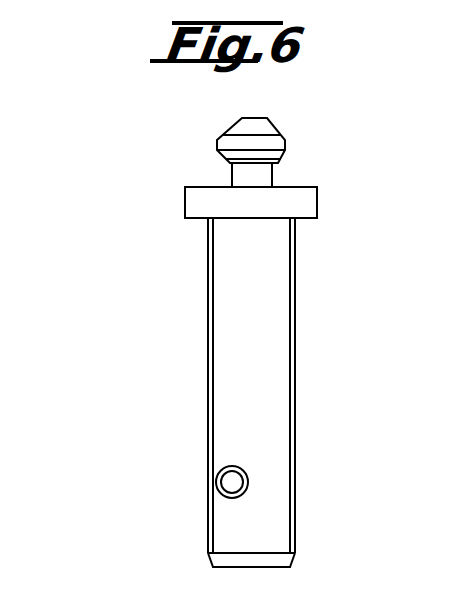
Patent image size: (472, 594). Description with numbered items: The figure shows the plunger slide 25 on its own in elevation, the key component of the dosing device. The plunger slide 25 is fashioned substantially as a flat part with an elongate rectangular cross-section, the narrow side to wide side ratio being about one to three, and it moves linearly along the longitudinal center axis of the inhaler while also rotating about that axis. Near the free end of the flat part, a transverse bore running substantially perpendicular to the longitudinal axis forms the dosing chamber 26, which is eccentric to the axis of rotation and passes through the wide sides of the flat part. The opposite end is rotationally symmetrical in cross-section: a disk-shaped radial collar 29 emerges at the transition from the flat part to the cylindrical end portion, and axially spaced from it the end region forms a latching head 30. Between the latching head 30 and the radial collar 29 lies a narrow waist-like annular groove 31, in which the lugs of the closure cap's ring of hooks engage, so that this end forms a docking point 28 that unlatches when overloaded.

The plunger slide 25 is at (200, 302).
The dosing chamber 26 is at (228, 480).
The docking point 28 is at (307, 138).
The radial collar 29 is at (308, 203).
The latching head 30 is at (235, 143).
The annular groove 31 is at (245, 175).